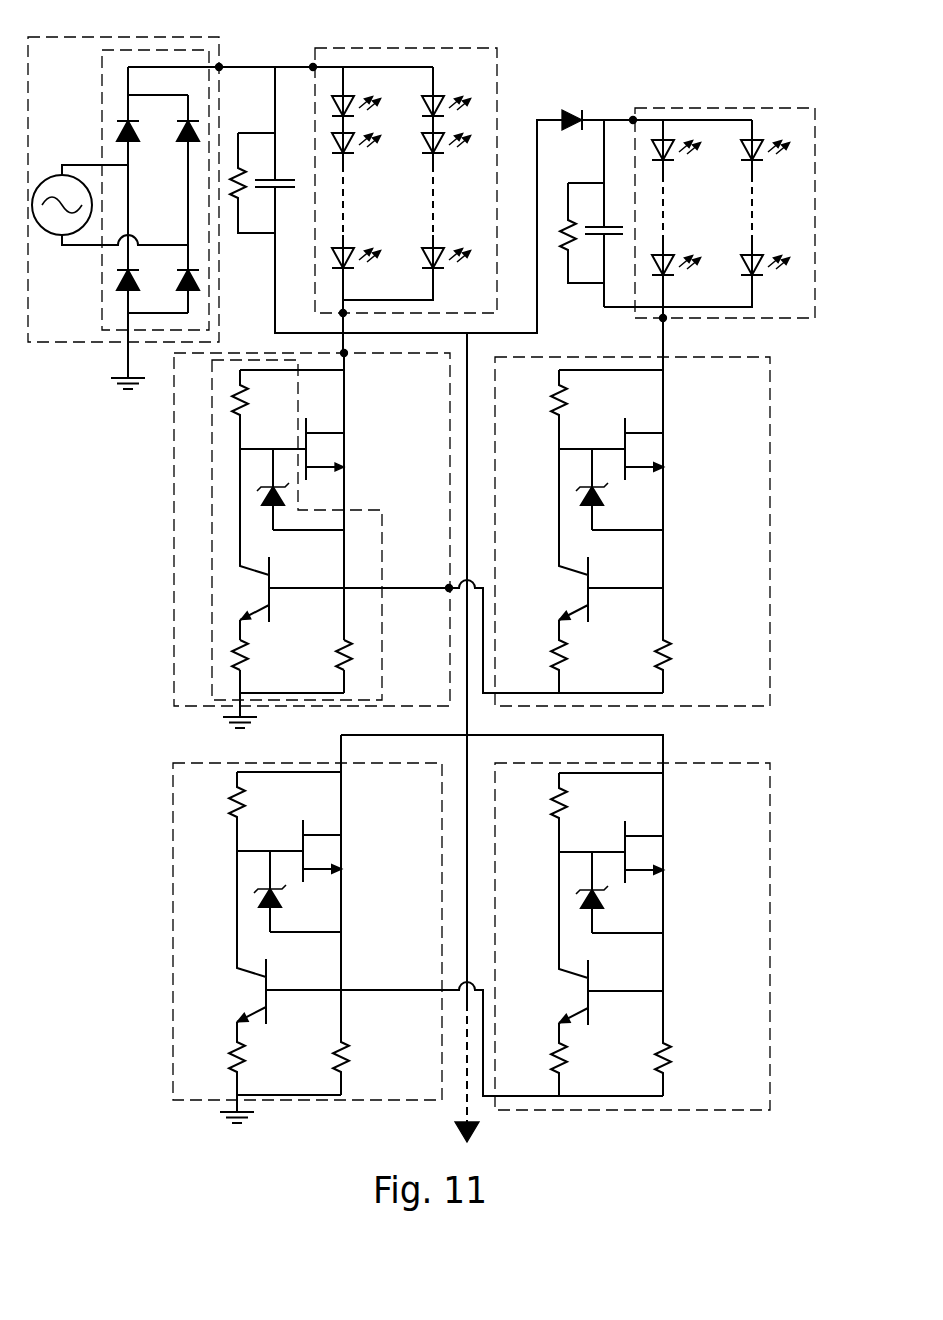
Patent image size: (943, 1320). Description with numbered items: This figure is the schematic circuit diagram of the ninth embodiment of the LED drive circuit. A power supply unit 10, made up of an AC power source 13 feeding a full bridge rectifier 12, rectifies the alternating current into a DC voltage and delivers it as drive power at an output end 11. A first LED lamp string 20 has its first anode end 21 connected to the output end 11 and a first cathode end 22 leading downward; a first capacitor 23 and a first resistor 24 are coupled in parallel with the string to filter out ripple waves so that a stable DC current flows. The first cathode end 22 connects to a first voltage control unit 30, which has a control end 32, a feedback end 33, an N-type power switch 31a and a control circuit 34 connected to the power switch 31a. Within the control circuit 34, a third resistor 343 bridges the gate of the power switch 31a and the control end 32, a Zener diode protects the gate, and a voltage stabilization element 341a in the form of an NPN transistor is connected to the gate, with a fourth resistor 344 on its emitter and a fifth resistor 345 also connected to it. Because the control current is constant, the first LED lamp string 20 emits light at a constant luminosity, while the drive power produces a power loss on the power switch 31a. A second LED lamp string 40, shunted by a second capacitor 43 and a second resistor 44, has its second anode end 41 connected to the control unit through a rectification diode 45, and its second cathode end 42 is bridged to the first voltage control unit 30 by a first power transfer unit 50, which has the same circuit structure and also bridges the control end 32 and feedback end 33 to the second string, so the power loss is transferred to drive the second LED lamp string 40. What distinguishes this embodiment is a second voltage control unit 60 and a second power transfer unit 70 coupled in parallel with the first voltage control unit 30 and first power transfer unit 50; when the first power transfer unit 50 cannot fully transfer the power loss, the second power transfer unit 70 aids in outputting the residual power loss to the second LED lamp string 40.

The power supply unit 10 is at (155, 24).
The output end 11 is at (221, 66).
The full bridge rectifier 12 is at (155, 50).
The AC power source 13 is at (55, 176).
The first LED lamp string 20 is at (432, 47).
The first anode end 21 is at (313, 66).
The first cathode end 22 is at (345, 314).
The first capacitor 23 is at (277, 178).
The first resistor 24 is at (239, 200).
The first voltage control unit 30 is at (160, 466).
The power switch 31a is at (346, 451).
The control end 32 is at (343, 352).
The feedback end 33 is at (447, 586).
The control circuit 34 is at (210, 585).
The second LED lamp string 40 is at (758, 100).
The second anode end 41 is at (632, 118).
The second cathode end 42 is at (665, 319).
The second capacitor 43 is at (606, 228).
The second resistor 44 is at (568, 250).
The rectification diode 45 is at (573, 111).
The first power transfer unit 50 is at (785, 490).
The second voltage control unit 60 is at (168, 922).
The second power transfer unit 70 is at (782, 920).
The voltage stabilization element 341a is at (272, 588).
The third resistor 343 is at (236, 405).
The fourth resistor 344 is at (236, 658).
The fifth resistor 345 is at (343, 660).